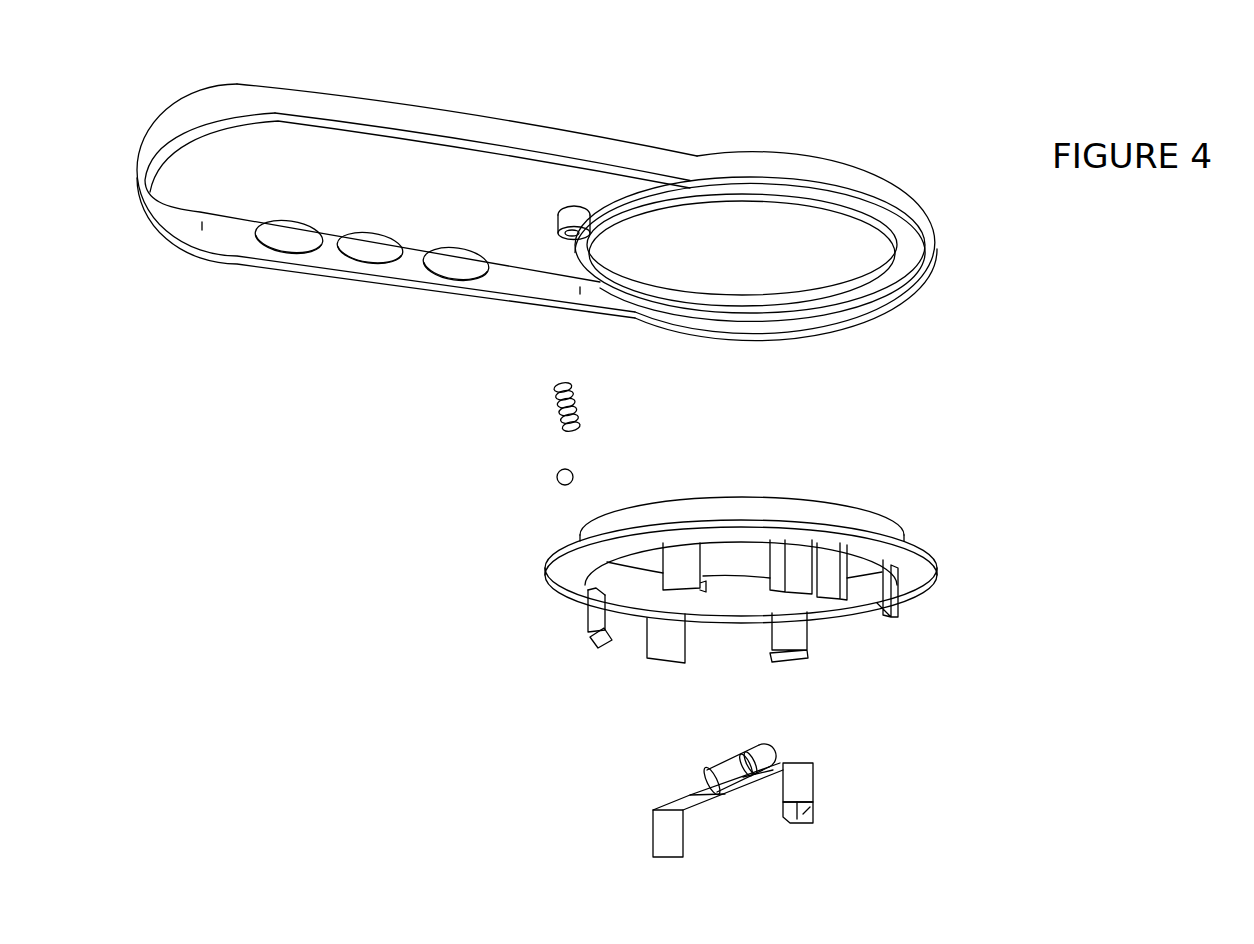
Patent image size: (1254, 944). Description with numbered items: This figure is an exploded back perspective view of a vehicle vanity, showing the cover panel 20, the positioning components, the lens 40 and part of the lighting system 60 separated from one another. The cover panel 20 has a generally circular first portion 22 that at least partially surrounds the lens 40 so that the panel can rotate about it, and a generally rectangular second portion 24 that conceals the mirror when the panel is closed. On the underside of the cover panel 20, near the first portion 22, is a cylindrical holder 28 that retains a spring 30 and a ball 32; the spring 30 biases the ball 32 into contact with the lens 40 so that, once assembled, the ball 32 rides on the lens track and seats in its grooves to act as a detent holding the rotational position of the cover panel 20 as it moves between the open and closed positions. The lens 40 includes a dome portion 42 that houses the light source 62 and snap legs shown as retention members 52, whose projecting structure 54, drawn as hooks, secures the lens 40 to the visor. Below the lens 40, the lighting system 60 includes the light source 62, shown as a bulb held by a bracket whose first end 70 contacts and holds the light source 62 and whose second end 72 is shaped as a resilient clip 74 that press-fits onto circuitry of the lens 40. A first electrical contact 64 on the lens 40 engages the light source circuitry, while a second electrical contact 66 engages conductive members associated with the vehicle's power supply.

The cover panel 20 is at (590, 200).
The first portion 22 is at (937, 250).
The second portion 24 is at (300, 85).
The holder 28 is at (562, 213).
The spring 30 is at (578, 407).
The ball 32 is at (573, 470).
The lens 40 is at (724, 575).
The dome portion 42 is at (827, 503).
The retention members 52 is at (587, 618).
The projecting structure 54 is at (596, 645).
The lighting system 60 is at (707, 780).
The light source 62 is at (734, 757).
The first electrical contact 64 is at (793, 577).
The second electrical contact 66 is at (830, 582).
The first end 70 is at (699, 780).
The second end 72 is at (663, 835).
The resilient clip 74 is at (813, 808).